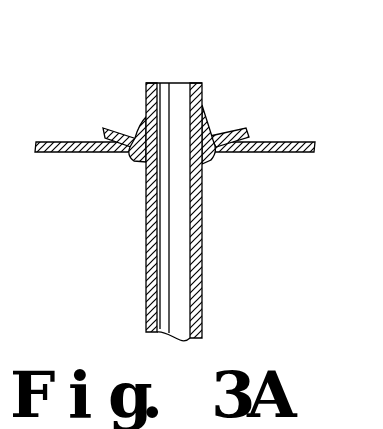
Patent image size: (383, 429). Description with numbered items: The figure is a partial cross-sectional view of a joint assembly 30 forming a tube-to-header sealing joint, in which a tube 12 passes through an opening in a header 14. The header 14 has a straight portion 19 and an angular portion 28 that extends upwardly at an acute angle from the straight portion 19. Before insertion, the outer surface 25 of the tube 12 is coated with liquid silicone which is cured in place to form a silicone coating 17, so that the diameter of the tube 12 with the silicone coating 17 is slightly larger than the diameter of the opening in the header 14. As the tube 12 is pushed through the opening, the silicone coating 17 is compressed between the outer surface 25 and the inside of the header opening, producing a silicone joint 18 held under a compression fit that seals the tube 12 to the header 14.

The tube 12 is at (180, 250).
The header 14 is at (263, 147).
The silicone coating 17 is at (202, 278).
The silicone joint 18 is at (133, 162).
The straight portion 19 is at (220, 152).
The outer surface 25 is at (204, 315).
The angular portion 28 is at (113, 131).
The joint assembly 30 is at (210, 74).